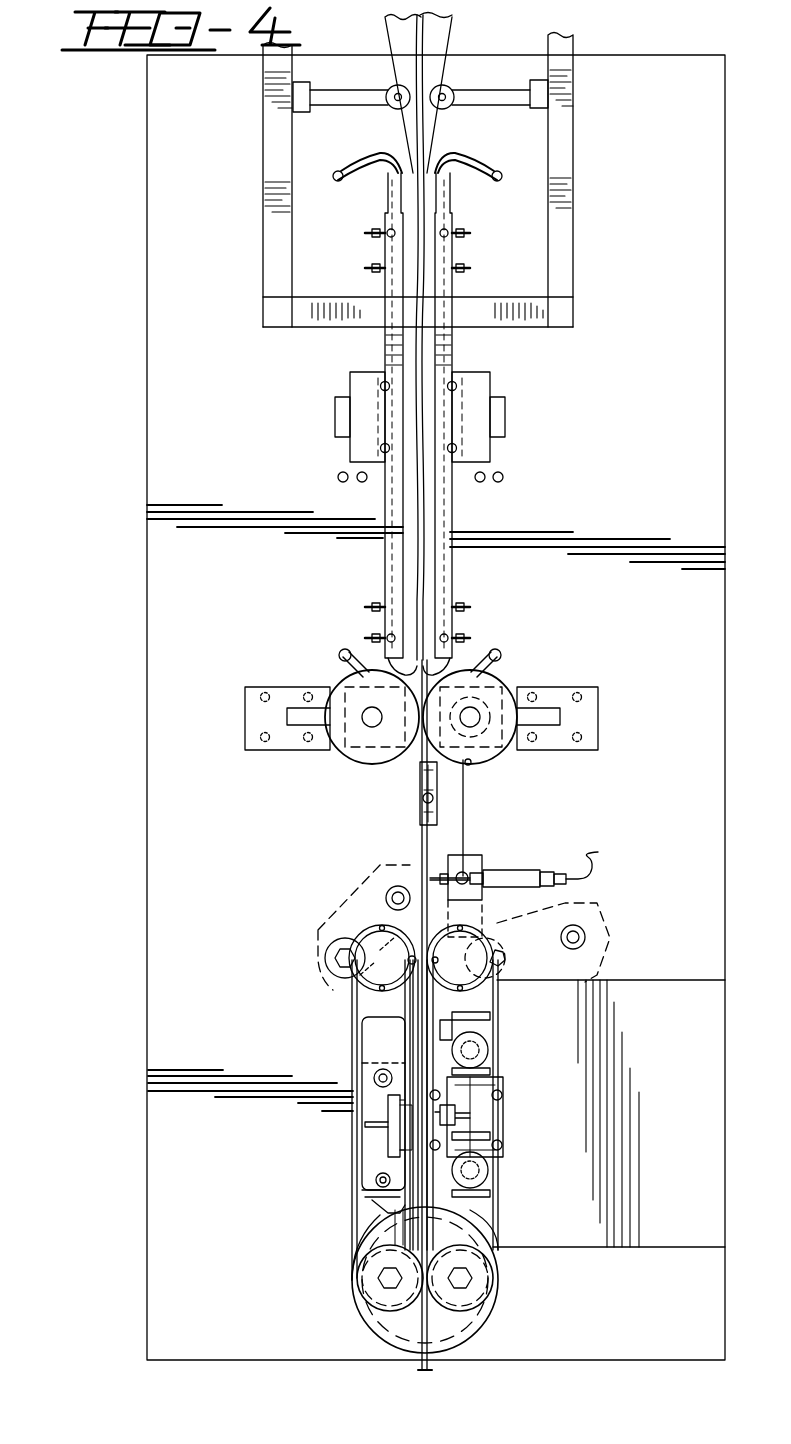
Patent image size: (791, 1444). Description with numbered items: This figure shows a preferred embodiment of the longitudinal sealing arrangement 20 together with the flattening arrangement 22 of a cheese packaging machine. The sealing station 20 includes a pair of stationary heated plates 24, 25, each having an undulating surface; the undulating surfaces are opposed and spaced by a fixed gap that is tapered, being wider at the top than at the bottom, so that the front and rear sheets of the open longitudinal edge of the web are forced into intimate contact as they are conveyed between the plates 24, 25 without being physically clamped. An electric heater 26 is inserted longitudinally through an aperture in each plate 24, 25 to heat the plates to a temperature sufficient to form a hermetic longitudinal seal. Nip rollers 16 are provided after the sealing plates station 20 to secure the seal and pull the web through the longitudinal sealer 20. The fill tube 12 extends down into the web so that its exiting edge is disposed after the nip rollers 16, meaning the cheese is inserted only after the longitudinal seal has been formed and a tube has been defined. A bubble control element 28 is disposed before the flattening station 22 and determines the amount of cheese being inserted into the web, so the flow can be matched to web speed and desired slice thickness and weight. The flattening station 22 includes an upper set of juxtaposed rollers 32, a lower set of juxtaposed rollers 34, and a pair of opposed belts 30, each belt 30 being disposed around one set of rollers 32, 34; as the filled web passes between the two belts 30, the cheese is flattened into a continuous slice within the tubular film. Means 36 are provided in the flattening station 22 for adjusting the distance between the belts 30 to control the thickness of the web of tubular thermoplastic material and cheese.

The fill tube 12 is at (432, 120).
The nip rollers 16 is at (345, 685).
The longitudinal sealing arrangement 20 is at (490, 504).
The flattening arrangement 22 is at (526, 1111).
The stationary heated plate 24 is at (452, 352).
The stationary heated plate 25 is at (386, 352).
The electric heater 26 is at (362, 162).
The bubble control element 28 is at (517, 870).
The opposed belts 30 is at (357, 1040).
The upper set of juxtaposed rollers 32 is at (497, 937).
The lower set of juxtaposed rollers 34 is at (362, 1297).
The belt distance adjusting means 36 is at (388, 1152).